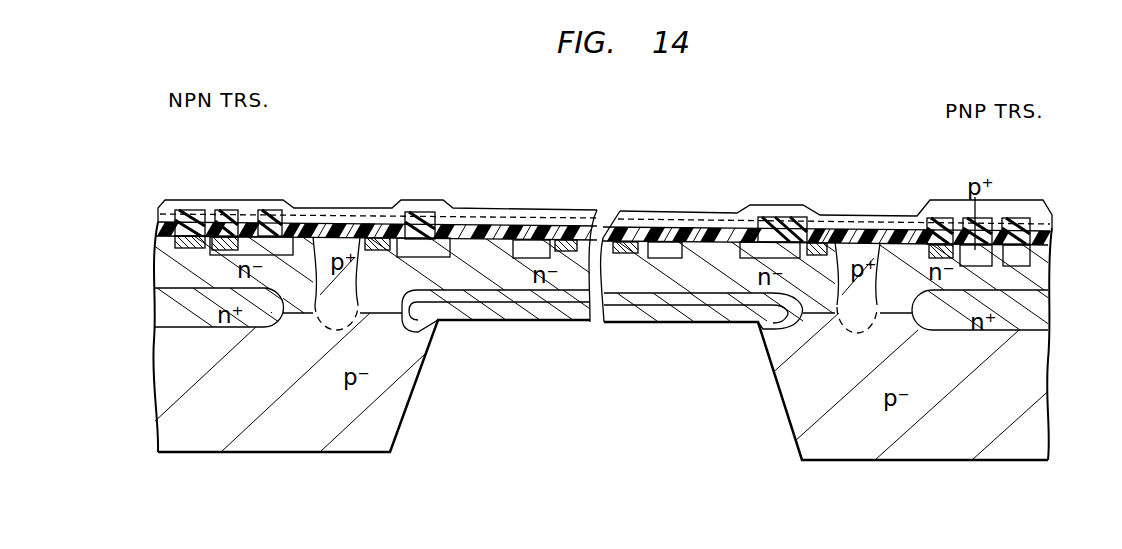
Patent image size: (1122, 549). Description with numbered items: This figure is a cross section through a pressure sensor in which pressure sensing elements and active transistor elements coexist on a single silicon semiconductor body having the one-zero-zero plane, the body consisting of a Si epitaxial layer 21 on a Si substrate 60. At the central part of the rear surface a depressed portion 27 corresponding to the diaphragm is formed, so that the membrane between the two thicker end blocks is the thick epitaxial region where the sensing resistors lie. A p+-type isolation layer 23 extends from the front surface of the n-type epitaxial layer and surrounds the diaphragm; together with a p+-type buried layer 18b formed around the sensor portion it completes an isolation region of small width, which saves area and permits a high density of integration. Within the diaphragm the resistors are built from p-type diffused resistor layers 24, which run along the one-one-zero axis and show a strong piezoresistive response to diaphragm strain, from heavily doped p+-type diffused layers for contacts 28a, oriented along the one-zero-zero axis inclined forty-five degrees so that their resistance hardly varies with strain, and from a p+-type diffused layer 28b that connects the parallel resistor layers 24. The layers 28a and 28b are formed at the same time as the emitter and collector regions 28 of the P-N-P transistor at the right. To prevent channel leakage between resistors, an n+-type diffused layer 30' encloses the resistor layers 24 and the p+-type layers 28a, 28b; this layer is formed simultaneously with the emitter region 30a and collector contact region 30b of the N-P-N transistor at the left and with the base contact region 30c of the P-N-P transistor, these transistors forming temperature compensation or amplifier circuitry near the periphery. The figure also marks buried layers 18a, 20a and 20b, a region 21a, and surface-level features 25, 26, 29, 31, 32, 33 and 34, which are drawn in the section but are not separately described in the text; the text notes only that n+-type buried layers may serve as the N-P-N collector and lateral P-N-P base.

The p+ buried layer 18a is at (513, 310).
The p+-type buried layer 18b is at (328, 332).
The n+ buried layer 20a is at (662, 300).
The n+ buried layer 20b is at (1050, 317).
The Si epitaxial layer 21 is at (1050, 273).
The n- epitaxial island 21a is at (563, 342).
The p+-type isolation layer 23 is at (341, 246).
The p-type diffused resistor layer 24 is at (508, 242).
The emitter electrode 25 is at (420, 214).
The insulating film 26 is at (160, 210).
The depressed portion 27 is at (413, 404).
The emitter and collector regions 28 is at (1043, 216).
The p+-type diffused layer for contacts 28a is at (441, 250).
The p+-type diffused layer 28b is at (536, 252).
The p isolation region 29 is at (318, 240).
The n+-type diffused layer 30' is at (622, 255).
The emitter region 30a is at (272, 236).
The collector contact region 30b is at (180, 209).
The base contact region 30c is at (928, 250).
The polysilicon electrode 31 is at (201, 212).
The polysilicon electrode 32 is at (226, 214).
The electrode 33 is at (988, 228).
The electrode 34 is at (1037, 220).
The Si substrate 60 is at (1040, 390).